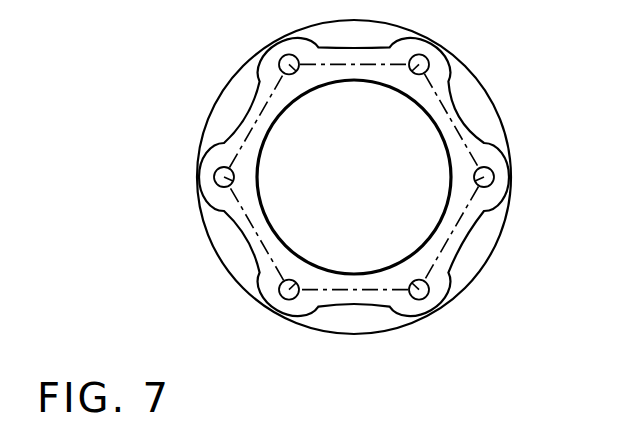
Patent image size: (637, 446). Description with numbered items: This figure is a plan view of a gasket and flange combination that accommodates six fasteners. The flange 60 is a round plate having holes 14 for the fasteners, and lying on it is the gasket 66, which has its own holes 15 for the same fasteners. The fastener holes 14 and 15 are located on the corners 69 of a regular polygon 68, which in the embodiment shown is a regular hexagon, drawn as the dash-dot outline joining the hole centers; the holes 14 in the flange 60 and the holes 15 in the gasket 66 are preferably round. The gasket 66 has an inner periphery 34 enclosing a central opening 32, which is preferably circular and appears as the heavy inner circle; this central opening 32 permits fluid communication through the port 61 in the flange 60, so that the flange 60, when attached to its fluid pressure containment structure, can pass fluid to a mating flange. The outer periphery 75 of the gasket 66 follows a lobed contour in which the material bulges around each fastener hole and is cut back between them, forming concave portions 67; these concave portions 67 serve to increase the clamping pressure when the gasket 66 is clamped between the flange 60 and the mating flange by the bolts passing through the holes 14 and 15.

The hole 14 is at (493, 173).
The hole 15 is at (280, 62).
The central opening 32 is at (372, 207).
The inner periphery 34 is at (433, 129).
The flange 60 is at (219, 112).
The port 61 is at (259, 244).
The gasket 66 is at (231, 205).
The concave portion 67 is at (466, 249).
The regular polygon 68 is at (452, 123).
The corner 69 is at (428, 60).
The outer periphery 75 is at (212, 144).